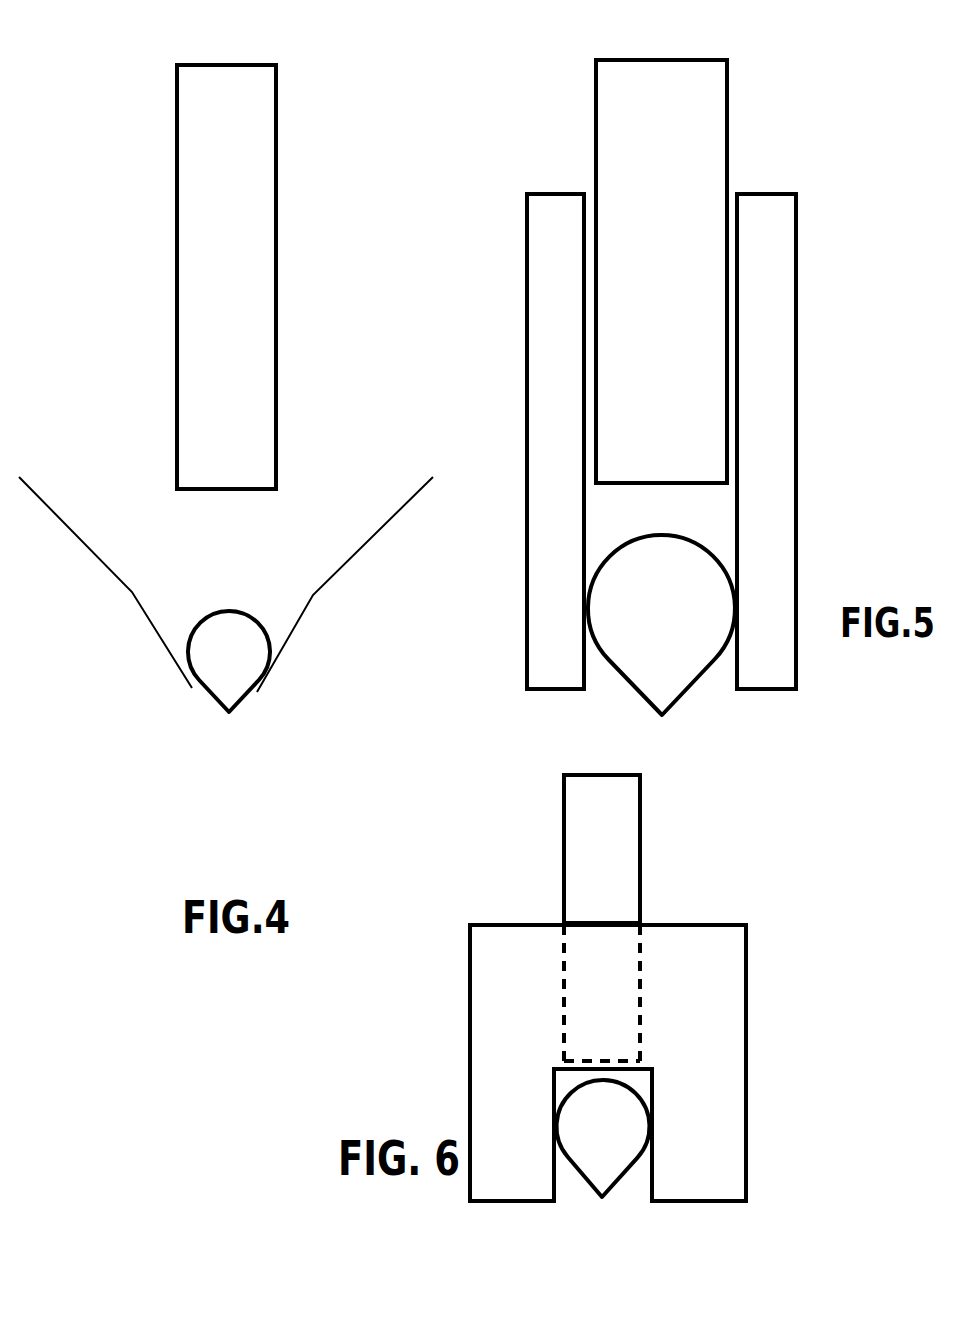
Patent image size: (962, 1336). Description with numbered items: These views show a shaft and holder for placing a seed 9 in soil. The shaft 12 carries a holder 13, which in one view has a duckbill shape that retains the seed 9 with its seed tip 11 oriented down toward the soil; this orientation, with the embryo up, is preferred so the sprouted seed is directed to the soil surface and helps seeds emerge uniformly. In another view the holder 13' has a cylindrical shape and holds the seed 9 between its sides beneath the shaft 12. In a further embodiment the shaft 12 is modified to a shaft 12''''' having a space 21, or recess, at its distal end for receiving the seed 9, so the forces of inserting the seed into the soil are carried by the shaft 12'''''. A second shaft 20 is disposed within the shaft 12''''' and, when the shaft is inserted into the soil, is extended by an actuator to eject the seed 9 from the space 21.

In FIG. 4, the seed 9 is at (197, 690).
In FIG. 5, the seed 9 is at (713, 658).
In FIG. 6, the seed 9 is at (635, 1162).
In FIG. 4, the seed tip 11 is at (230, 713).
In FIG. 4, the shaft 12 is at (293, 277).
In FIG. 5, the shaft 12 is at (715, 253).
In FIG. 4, the holder 13 is at (257, 584).
In FIG. 5, the holder 13' is at (721, 441).
In FIG. 6, the second shaft 20 is at (642, 847).
In FIG. 6, the shaft 12''''' is at (683, 1063).
In FIG. 6, the space 21 is at (567, 1200).